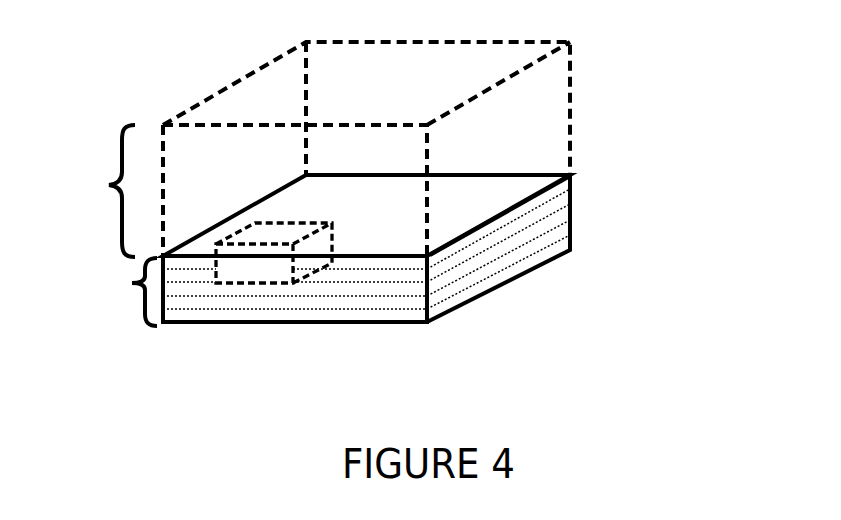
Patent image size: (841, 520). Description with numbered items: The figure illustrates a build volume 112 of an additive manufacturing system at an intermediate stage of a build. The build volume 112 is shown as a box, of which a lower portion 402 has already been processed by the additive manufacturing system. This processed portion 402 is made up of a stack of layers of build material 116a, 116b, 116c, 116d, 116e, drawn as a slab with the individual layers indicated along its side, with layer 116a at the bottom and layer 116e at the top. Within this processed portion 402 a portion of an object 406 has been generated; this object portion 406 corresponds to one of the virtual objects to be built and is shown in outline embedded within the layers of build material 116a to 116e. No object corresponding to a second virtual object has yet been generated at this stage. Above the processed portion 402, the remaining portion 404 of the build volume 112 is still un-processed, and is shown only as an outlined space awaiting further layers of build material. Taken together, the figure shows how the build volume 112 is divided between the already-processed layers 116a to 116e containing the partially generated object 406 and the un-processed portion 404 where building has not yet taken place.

The build volume 112 is at (610, 110).
The un-processed portion of the build volume 404 is at (91, 191).
The processed portion of the build volume 402 is at (321, 250).
The object portion 406 is at (253, 283).
The layer of build material 116a is at (442, 307).
The layer of build material 116b is at (473, 277).
The layer of build material 116c is at (497, 250).
The layer of build material 116d is at (535, 217).
The layer of build material 116e is at (557, 190).